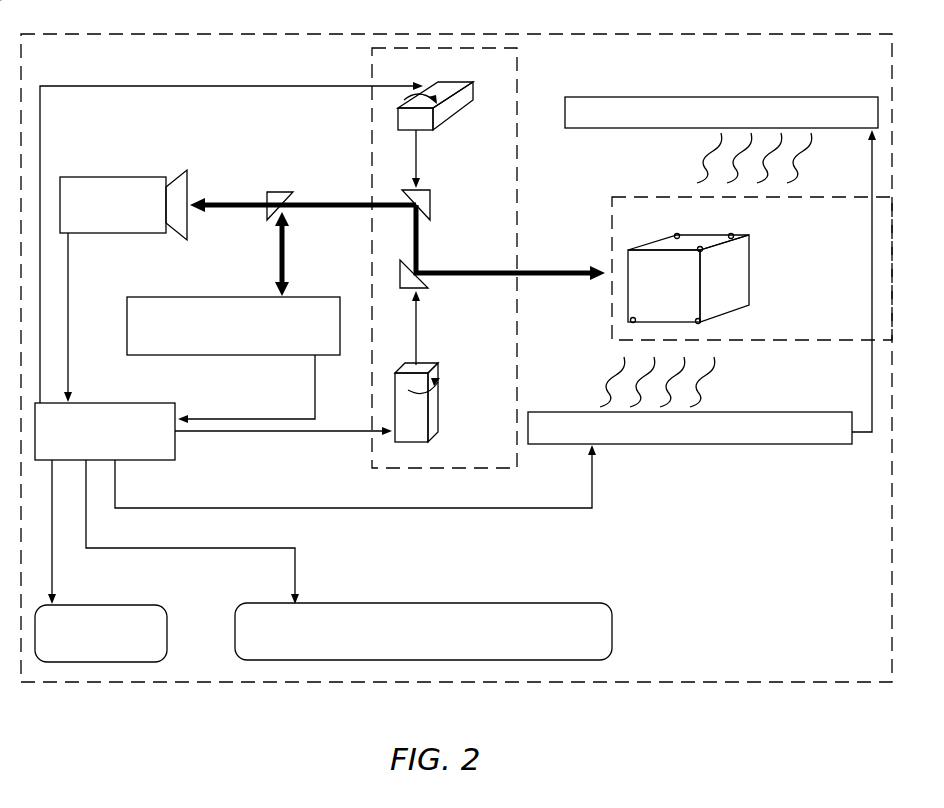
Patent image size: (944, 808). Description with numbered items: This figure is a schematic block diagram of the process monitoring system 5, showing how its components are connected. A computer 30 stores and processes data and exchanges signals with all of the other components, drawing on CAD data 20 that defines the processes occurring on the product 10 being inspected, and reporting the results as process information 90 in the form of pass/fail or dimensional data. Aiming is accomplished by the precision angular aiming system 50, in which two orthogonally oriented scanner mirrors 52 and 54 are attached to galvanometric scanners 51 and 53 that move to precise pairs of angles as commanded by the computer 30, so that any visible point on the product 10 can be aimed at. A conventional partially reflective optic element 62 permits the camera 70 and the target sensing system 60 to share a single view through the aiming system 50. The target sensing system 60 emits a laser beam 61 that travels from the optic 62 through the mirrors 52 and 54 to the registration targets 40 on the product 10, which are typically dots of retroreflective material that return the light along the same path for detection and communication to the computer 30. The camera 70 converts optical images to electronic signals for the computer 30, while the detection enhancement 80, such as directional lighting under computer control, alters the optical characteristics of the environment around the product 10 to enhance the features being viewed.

The process monitoring system 5 is at (575, 34).
The product 10 is at (752, 282).
The CAD data 20 is at (73, 605).
The computer 30 is at (129, 403).
The registration targets 40 is at (674, 234).
The precision angular aiming system 50 is at (517, 166).
The galvanometric scanner 51 is at (455, 80).
The scanner mirror 52 is at (429, 192).
The galvanometric scanner 53 is at (433, 440).
The scanner mirror 54 is at (427, 290).
The target sensing system 60 is at (206, 297).
The laser beam 61 is at (231, 200).
The partially reflective optic element 62 is at (293, 192).
The camera 70 is at (129, 177).
The detection enhancement 80 is at (630, 97).
The process information 90 is at (393, 603).